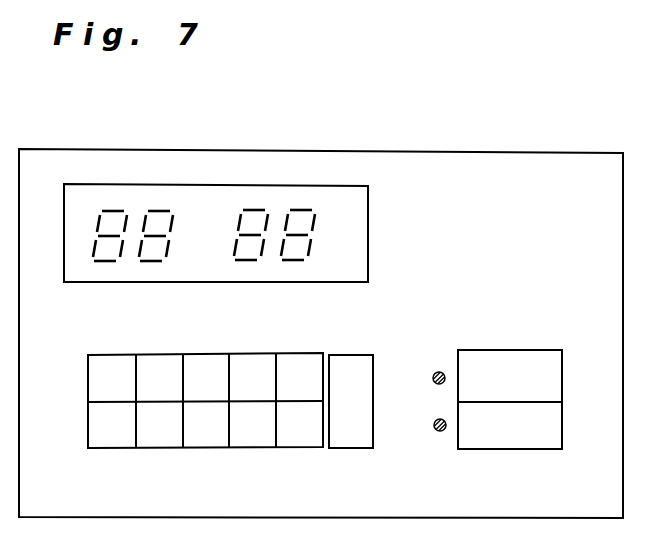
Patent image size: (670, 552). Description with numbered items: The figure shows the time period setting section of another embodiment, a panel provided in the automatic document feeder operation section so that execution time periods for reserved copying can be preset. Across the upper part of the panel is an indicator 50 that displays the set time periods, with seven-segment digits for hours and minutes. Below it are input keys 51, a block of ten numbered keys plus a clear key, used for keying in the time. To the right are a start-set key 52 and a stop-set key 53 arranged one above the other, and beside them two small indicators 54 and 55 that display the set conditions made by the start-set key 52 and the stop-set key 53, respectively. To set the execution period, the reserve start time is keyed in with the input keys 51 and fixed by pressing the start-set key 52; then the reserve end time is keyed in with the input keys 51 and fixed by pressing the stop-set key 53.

The indicator 50 is at (368, 186).
The input keys 51 is at (302, 351).
The start-set key 52 is at (562, 350).
The stop-set key 53 is at (562, 449).
The indicator 54 is at (435, 373).
The indicator 55 is at (437, 431).